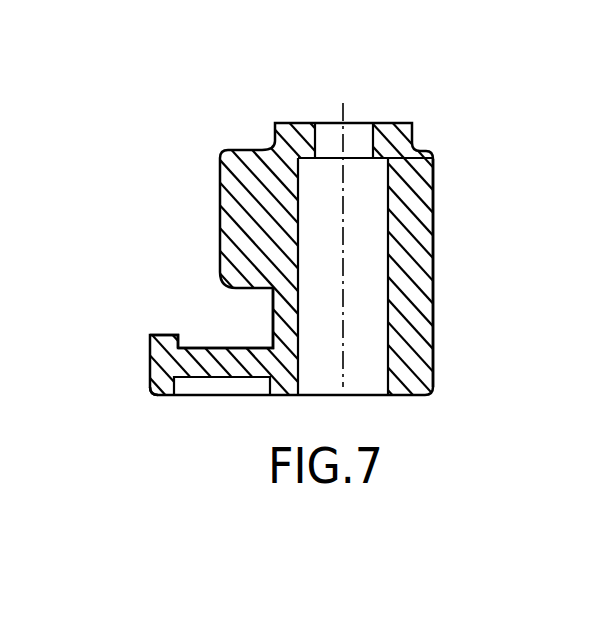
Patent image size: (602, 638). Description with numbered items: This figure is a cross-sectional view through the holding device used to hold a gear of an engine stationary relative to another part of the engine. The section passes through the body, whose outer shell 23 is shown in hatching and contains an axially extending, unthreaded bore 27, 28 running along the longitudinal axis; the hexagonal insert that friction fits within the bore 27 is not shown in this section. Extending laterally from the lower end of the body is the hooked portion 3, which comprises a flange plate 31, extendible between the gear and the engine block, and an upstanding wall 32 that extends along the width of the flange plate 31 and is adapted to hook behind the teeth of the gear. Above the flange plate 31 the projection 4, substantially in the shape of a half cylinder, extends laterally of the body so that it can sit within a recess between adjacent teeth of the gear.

The projection 4 is at (248, 234).
The bore 28 is at (357, 157).
The bore 27 is at (365, 338).
The outer shell 23 is at (433, 243).
The flange plate 31 is at (213, 343).
The upstanding wall 32 is at (162, 350).
The hooked portion 3 is at (159, 391).